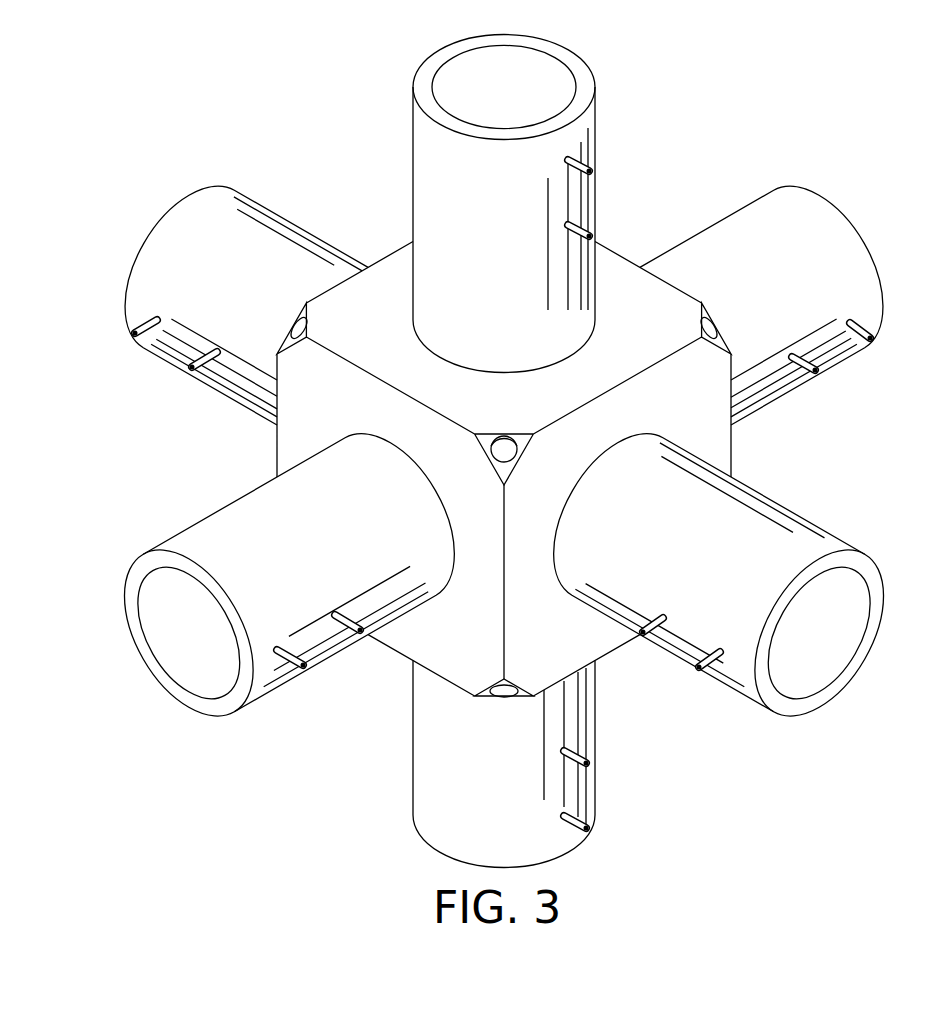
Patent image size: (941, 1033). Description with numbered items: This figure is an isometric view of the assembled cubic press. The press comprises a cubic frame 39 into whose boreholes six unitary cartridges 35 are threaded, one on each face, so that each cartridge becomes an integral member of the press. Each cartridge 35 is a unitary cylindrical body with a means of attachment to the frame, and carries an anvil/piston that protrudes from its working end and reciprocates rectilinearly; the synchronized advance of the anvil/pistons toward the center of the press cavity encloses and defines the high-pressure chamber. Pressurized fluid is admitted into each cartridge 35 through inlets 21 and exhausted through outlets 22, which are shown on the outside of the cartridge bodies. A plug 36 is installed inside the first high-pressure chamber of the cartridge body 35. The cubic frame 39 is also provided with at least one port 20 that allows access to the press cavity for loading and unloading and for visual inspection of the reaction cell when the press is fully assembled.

The port 20 is at (705, 323).
The inlets 21 is at (699, 667).
The outlets 22 is at (586, 763).
The cartridge 35 is at (833, 546).
The plug 36 is at (853, 622).
The cubic frame 39 is at (712, 441).